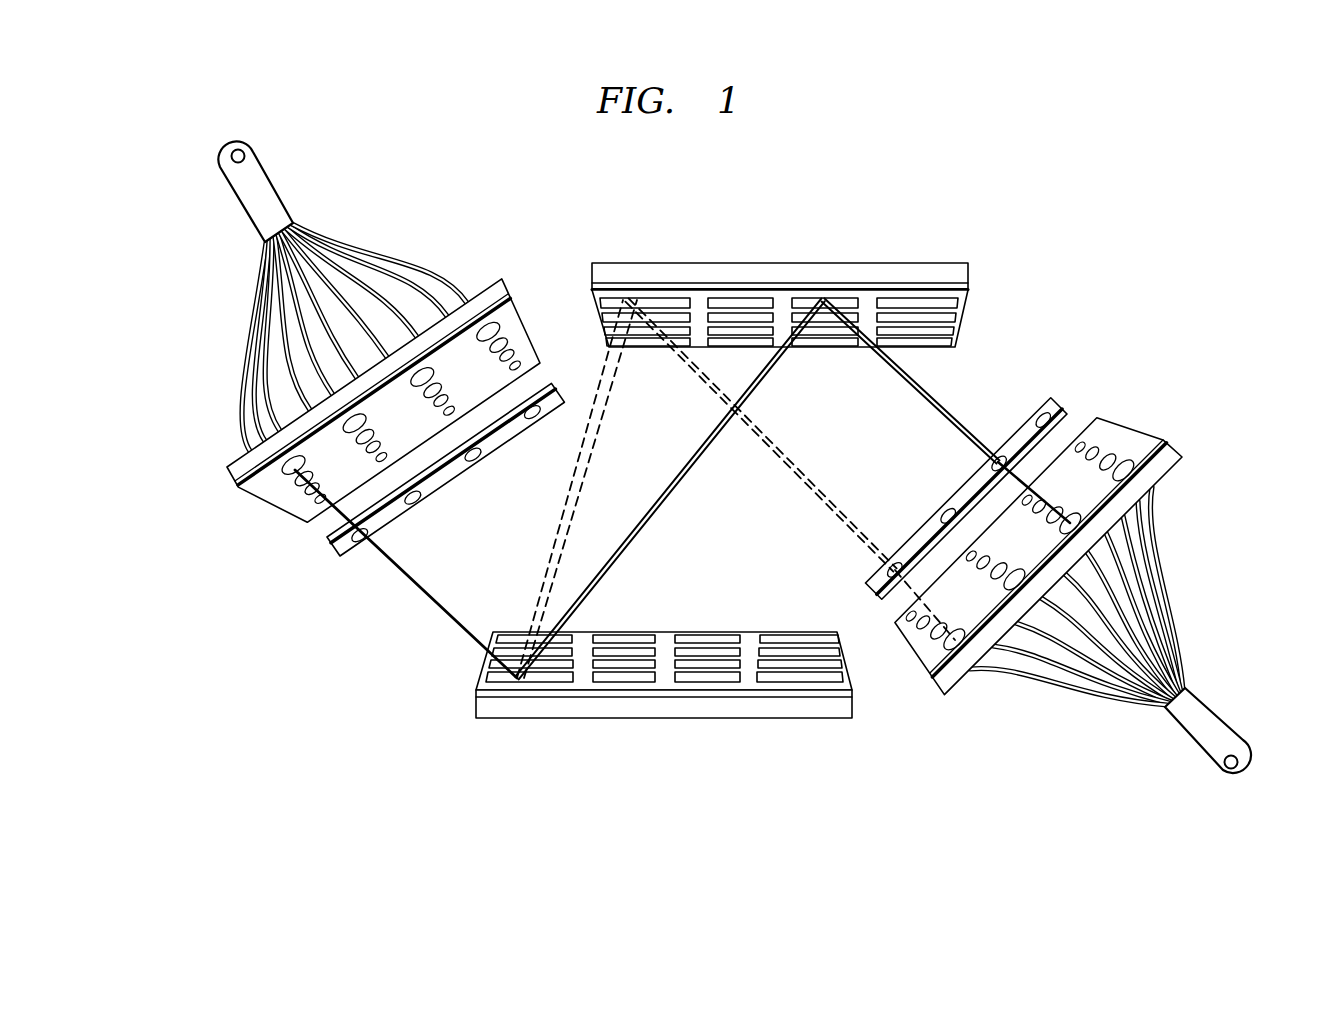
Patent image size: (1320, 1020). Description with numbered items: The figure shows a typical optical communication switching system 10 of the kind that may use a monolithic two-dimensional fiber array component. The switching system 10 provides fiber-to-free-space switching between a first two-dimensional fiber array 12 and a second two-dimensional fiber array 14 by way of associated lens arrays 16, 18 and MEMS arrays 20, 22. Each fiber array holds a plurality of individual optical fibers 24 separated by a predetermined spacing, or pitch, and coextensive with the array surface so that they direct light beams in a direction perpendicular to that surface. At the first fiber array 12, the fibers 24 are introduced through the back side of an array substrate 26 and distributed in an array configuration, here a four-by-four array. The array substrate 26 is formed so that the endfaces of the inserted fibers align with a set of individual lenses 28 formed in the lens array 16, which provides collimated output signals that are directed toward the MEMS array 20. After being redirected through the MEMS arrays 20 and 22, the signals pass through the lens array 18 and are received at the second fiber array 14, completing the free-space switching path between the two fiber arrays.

The optical communication switching system 10 is at (1083, 257).
The first 2D fiber array 12 is at (226, 470).
The second 2D fiber array 14 is at (1170, 442).
The lens array 16 is at (335, 546).
The lens array 18 is at (1055, 402).
The MEMS array 20 is at (478, 712).
The MEMS array 22 is at (882, 270).
The optical fibers 24 is at (250, 348).
The array substrate 26 is at (488, 283).
The individual lenses 28 is at (413, 499).